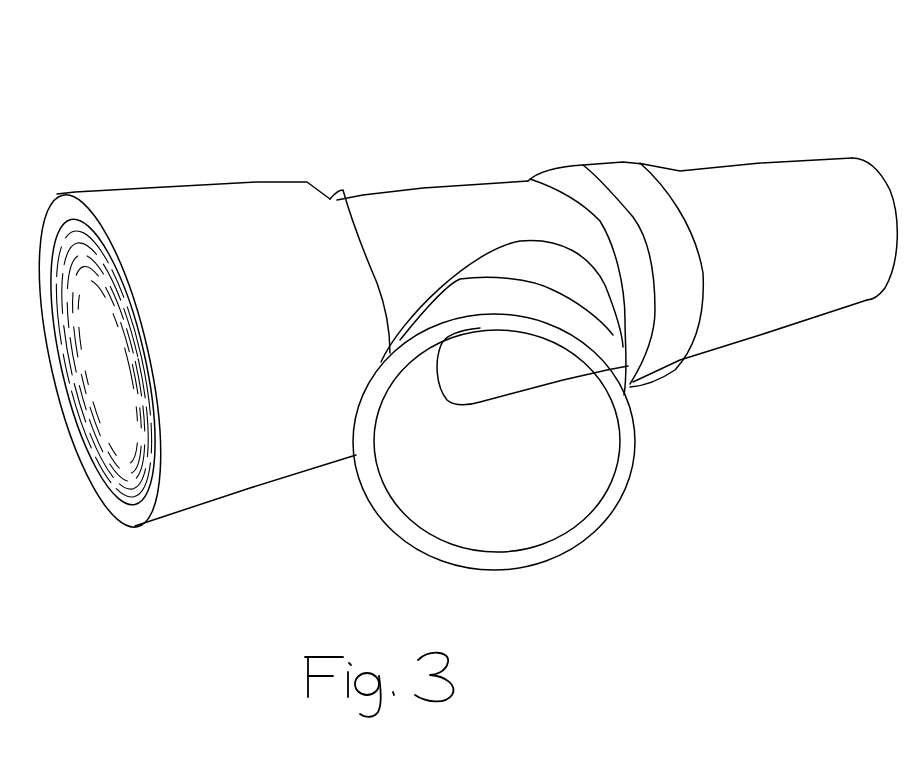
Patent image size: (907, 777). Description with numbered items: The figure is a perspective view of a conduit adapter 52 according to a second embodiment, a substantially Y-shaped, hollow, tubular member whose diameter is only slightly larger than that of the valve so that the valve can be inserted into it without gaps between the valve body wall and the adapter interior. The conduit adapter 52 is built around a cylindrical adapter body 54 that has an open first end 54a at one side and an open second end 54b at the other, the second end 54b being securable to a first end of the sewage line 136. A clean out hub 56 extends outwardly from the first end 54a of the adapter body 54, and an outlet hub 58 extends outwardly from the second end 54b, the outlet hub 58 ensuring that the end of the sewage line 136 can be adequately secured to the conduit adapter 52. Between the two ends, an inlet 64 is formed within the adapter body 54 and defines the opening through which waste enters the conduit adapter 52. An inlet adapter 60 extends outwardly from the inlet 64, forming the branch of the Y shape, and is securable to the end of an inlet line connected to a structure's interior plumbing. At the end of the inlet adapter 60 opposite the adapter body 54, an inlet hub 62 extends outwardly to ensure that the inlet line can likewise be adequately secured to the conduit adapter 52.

The conduit adapter 52 is at (456, 357).
The adapter body 54 is at (432, 203).
The first end 54a is at (343, 218).
The second end 54b is at (535, 186).
The clean out hub 56 is at (150, 198).
The outlet hub 58 is at (631, 178).
The inlet adapter 60 is at (507, 257).
The inlet hub 62 is at (625, 375).
The inlet 64 is at (510, 394).
The sewage line 136 is at (805, 185).